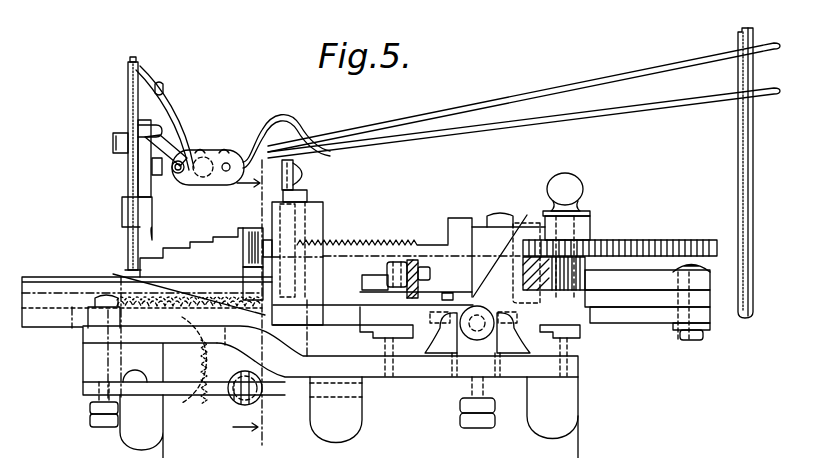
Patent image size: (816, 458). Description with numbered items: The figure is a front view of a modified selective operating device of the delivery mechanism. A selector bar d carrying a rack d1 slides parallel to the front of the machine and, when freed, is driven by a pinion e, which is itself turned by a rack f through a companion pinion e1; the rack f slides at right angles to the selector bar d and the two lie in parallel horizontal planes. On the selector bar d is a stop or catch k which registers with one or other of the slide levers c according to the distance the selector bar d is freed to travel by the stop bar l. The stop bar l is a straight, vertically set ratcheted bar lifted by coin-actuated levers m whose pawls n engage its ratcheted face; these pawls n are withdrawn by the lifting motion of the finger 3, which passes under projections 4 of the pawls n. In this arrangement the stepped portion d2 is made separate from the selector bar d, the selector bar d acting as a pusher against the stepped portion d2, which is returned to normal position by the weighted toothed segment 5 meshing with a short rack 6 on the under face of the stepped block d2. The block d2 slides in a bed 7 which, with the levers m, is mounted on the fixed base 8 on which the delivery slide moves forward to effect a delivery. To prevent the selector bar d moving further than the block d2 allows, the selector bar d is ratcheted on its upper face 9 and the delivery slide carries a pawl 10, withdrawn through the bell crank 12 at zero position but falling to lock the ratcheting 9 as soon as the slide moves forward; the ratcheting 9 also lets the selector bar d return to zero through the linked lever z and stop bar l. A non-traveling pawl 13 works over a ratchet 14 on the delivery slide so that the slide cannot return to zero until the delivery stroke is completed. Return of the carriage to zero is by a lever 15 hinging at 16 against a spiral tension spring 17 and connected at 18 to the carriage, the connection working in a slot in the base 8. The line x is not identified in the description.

The stop bar l is at (122, 103).
The pawls n is at (163, 117).
The projections 4 is at (162, 125).
The finger 3 is at (150, 139).
The axis line / spring wire x is at (281, 286).
The coin-actuated levers m is at (492, 102).
The bed 7 is at (53, 318).
The stepped portion d2 is at (187, 281).
The short rack 6 is at (231, 298).
The weighted toothed segment 5 is at (213, 430).
The hinge 16 is at (100, 386).
The spiral tension spring 17 is at (233, 408).
The fixed base 8 is at (345, 365).
The lever 15 is at (290, 392).
The connection 18 is at (488, 402).
The bell crank 12 is at (287, 217).
The pawl 10 is at (303, 226).
The ratcheted upper face 9 is at (365, 241).
The stop k is at (463, 219).
The ratchet 14 is at (364, 294).
The non-traveling pawl 13 is at (400, 292).
The pinion e is at (574, 265).
The selector bar d is at (640, 240).
The rack d1 is at (680, 249).
The companion pinion e1 is at (563, 248).
The slide lever c is at (647, 303).
The linked lever z is at (623, 292).
The rack f is at (523, 290).